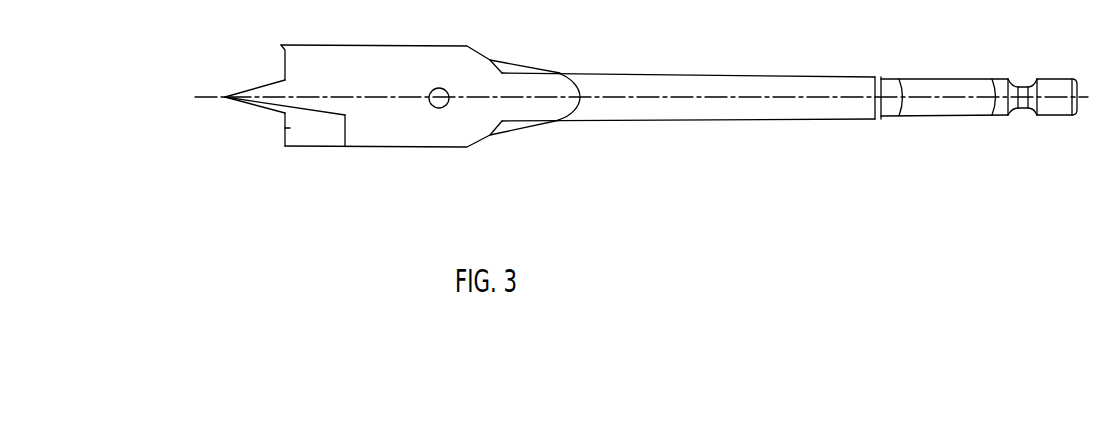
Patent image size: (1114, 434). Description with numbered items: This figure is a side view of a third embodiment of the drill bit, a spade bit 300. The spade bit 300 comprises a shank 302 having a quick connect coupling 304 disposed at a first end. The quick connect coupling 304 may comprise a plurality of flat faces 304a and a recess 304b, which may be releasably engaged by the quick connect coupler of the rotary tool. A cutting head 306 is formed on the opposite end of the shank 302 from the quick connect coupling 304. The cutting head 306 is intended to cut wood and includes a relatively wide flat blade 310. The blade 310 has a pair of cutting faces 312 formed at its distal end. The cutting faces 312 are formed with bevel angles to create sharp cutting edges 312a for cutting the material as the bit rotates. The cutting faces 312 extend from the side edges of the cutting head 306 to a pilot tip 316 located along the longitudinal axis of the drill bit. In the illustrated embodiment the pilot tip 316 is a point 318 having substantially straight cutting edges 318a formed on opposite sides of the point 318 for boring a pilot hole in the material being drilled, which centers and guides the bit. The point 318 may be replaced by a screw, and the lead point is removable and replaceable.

The spade bit 300 is at (326, 219).
The shank 302 is at (687, 110).
The quick connect coupling 304 is at (1048, 132).
The flat faces 304a is at (982, 105).
The recess 304b is at (1025, 113).
The cutting head 306 is at (377, 150).
The blade 310 is at (432, 115).
The cutting faces 312 is at (272, 63).
The cutting edges 312a is at (287, 128).
The pilot tip 316 is at (238, 111).
The point 318 is at (233, 94).
The cutting edges 318a is at (263, 108).